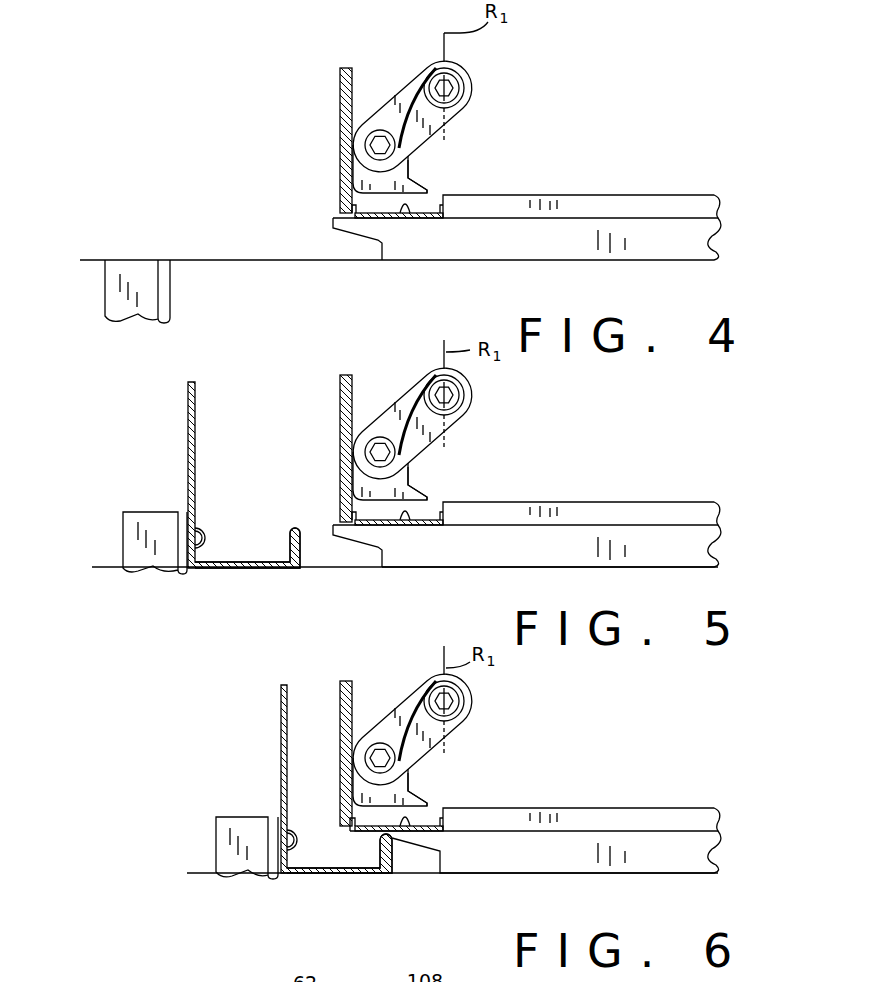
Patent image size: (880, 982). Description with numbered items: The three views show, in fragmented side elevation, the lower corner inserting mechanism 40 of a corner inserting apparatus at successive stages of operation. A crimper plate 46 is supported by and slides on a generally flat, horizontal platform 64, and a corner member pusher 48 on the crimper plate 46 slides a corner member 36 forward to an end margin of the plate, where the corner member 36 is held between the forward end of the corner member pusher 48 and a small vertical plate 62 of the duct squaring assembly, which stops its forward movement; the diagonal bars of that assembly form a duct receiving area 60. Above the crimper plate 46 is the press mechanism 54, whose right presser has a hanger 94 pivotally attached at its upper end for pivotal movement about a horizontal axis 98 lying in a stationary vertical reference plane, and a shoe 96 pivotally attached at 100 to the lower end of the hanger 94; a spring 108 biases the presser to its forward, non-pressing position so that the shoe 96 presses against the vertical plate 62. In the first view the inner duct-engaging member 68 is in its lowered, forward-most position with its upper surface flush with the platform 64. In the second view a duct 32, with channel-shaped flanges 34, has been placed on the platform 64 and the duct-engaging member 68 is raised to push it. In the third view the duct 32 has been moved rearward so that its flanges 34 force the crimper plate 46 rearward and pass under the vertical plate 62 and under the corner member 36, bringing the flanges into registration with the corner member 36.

In FIG. 5, the duct 32 is at (183, 437).
In FIG. 6, the duct 32 is at (278, 719).
In FIG. 5, the channel-shaped flanges 34 is at (250, 562).
In FIG. 6, the channel-shaped flanges 34 is at (347, 877).
In FIG. 4, the corner member 36 is at (405, 205).
In FIG. 5, the corner member 36 is at (397, 518).
In FIG. 6, the corner member 36 is at (406, 816).
In FIG. 4, the lower corner inserting mechanism 40 is at (458, 173).
In FIG. 5, the lower corner inserting mechanism 40 is at (548, 499).
In FIG. 6, the lower corner inserting mechanism 40 is at (550, 815).
In FIG. 4, the crimper plate 46 is at (667, 247).
In FIG. 5, the crimper plate 46 is at (682, 553).
In FIG. 6, the crimper plate 46 is at (687, 866).
In FIG. 4, the corner member pusher 48 is at (568, 206).
In FIG. 5, the corner member pusher 48 is at (678, 517).
In FIG. 6, the corner member pusher 48 is at (681, 811).
In FIG. 4, the press mechanism 54 is at (483, 74).
In FIG. 5, the press mechanism 54 is at (482, 408).
In FIG. 6, the press mechanism 54 is at (474, 684).
In FIG. 4, the duct receiving area 60 is at (233, 252).
In FIG. 4, the vertical plates 62 is at (340, 91).
In FIG. 5, the vertical plates 62 is at (340, 405).
In FIG. 6, the vertical plates 62 is at (340, 698).
In FIG. 4, the platform 64 is at (311, 258).
In FIG. 5, the platform 64 is at (107, 565).
In FIG. 6, the platform 64 is at (188, 872).
In FIG. 4, the inner duct-engaging member 68 is at (143, 287).
In FIG. 5, the inner duct-engaging member 68 is at (150, 558).
In FIG. 6, the inner duct-engaging member 68 is at (250, 858).
In FIG. 4, the hanger 94 is at (465, 108).
In FIG. 5, the hanger 94 is at (463, 433).
In FIG. 6, the hanger 94 is at (450, 735).
In FIG. 4, the shoe 96 is at (410, 172).
In FIG. 5, the shoe 96 is at (413, 486).
In FIG. 6, the shoe 96 is at (412, 786).
In FIG. 4, the horizontal axis 98 is at (457, 70).
In FIG. 5, the horizontal axis 98 is at (458, 397).
In FIG. 6, the horizontal axis 98 is at (462, 703).
In FIG. 4, the pivotal attachment 100 is at (378, 130).
In FIG. 5, the pivotal attachment 100 is at (378, 437).
In FIG. 6, the pivotal attachment 100 is at (378, 744).
In FIG. 4, the spring 108 is at (410, 103).
In FIG. 5, the spring 108 is at (410, 410).
In FIG. 6, the spring 108 is at (409, 712).